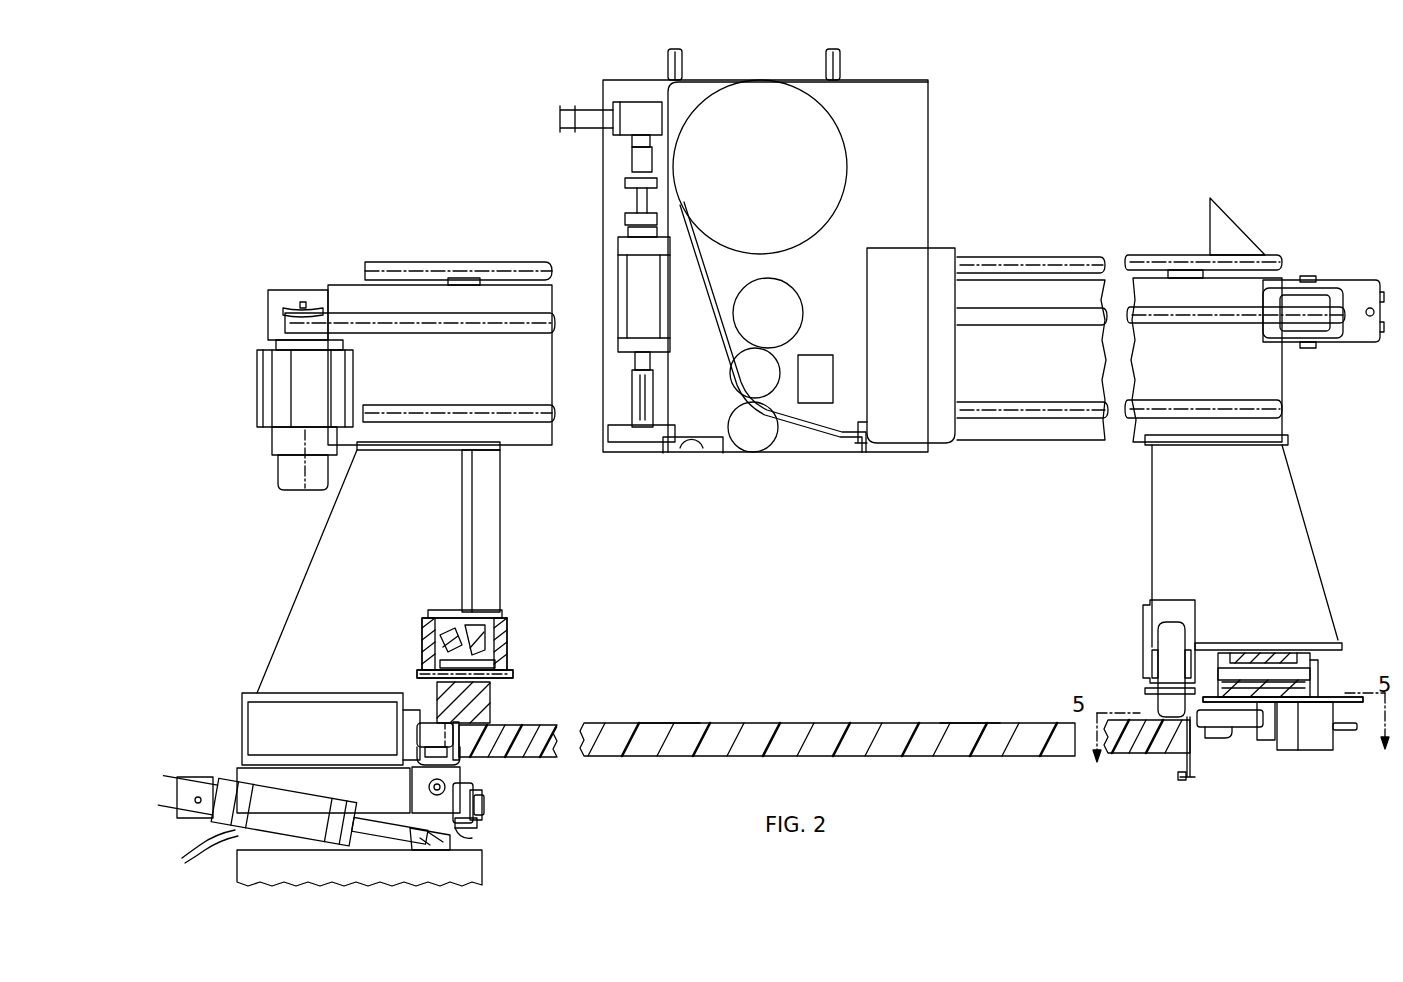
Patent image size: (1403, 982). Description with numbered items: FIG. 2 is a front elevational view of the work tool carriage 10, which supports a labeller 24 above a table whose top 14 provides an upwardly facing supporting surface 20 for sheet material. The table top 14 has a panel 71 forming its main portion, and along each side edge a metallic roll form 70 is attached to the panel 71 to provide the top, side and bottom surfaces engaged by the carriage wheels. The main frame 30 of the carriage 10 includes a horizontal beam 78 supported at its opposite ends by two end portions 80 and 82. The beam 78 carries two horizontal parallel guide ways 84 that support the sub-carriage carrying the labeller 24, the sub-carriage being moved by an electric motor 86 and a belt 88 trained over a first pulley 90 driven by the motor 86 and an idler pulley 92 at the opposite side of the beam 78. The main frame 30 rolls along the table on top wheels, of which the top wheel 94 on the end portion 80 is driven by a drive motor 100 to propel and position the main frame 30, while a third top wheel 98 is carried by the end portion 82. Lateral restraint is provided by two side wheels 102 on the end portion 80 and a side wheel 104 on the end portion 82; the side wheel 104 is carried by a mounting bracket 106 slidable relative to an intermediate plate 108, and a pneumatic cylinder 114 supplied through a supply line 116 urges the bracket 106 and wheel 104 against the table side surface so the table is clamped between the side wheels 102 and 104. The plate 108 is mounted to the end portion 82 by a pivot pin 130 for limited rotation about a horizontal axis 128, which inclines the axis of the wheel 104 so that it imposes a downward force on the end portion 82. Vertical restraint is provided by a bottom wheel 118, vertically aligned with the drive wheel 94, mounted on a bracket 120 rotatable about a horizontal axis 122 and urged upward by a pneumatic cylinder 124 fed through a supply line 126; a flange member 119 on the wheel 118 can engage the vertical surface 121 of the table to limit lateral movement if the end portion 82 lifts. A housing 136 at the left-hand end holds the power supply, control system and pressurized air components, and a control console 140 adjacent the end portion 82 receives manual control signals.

The carriage 10 is at (1115, 232).
The table top 14 is at (968, 730).
The supporting surface 20 is at (866, 724).
The labeller 24 is at (945, 165).
The main frame 30 is at (1272, 380).
The roll form 70 is at (500, 725).
The panel 71 is at (663, 722).
The horizontal beam 78 is at (1020, 437).
The end portion 80 is at (490, 521).
The end portion 82 is at (1152, 502).
The guide ways 84 is at (1022, 262).
The electric motor 86 is at (258, 380).
The belt 88 is at (465, 325).
The first pulley 90 is at (290, 303).
The idler pulley 92 is at (1325, 296).
The top wheel 94 is at (480, 630).
The top wheel 98 is at (1170, 620).
The drive motor 100 is at (278, 612).
The side wheels 102 is at (430, 735).
The side wheel 104 is at (1232, 728).
The mounting bracket 106 is at (1266, 742).
The intermediate plate 108 is at (1370, 672).
The pneumatic cylinder 114 is at (1290, 750).
The supply line 116 is at (1345, 732).
The bottom wheel 118 is at (475, 840).
The flange member 119 is at (480, 822).
The bracket 120 is at (450, 850).
The vertical surface 121 is at (482, 787).
The horizontal axis 122 is at (428, 787).
The pneumatic cylinder 124 is at (236, 775).
The supply line 126 is at (210, 855).
The horizontal axis 128 is at (1355, 668).
The pivot pin 130 is at (1258, 653).
The housing 136 is at (482, 870).
The control console 140 is at (1237, 238).